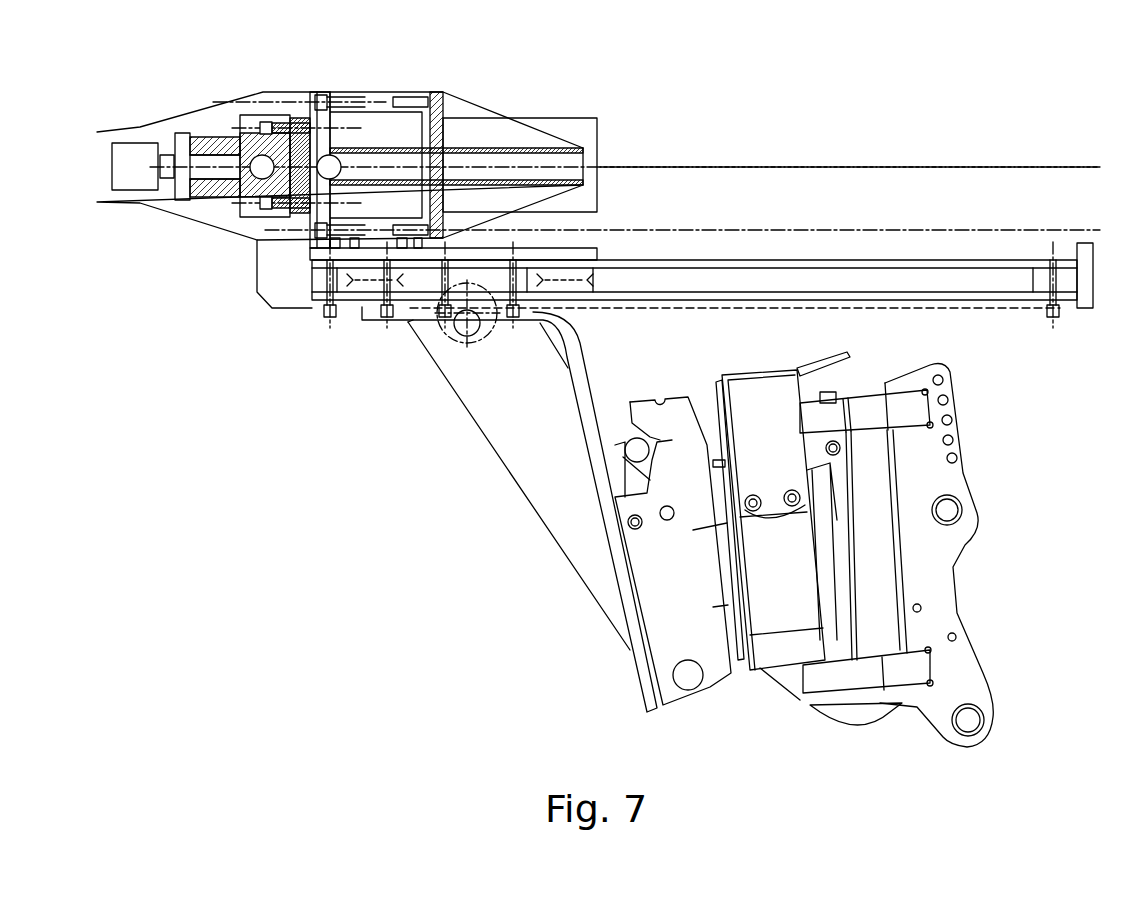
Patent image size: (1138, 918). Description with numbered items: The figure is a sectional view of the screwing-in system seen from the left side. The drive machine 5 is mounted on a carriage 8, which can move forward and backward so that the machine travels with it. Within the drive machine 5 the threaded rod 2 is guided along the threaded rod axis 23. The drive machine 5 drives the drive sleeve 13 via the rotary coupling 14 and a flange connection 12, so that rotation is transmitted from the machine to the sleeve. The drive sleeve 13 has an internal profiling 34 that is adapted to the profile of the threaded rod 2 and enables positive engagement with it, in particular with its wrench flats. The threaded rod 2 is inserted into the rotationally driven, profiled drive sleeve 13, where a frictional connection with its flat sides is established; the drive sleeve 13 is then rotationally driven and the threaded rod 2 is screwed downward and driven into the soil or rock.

The internal profiling 34 is at (212, 158).
The drive sleeve 13 is at (197, 137).
The threaded rod 2 is at (250, 155).
The flange connection 12 is at (280, 142).
The rotary coupling 14 is at (308, 138).
The drive machine 5 is at (473, 115).
The threaded rod axis 23 is at (713, 167).
The carriage 8 is at (998, 282).